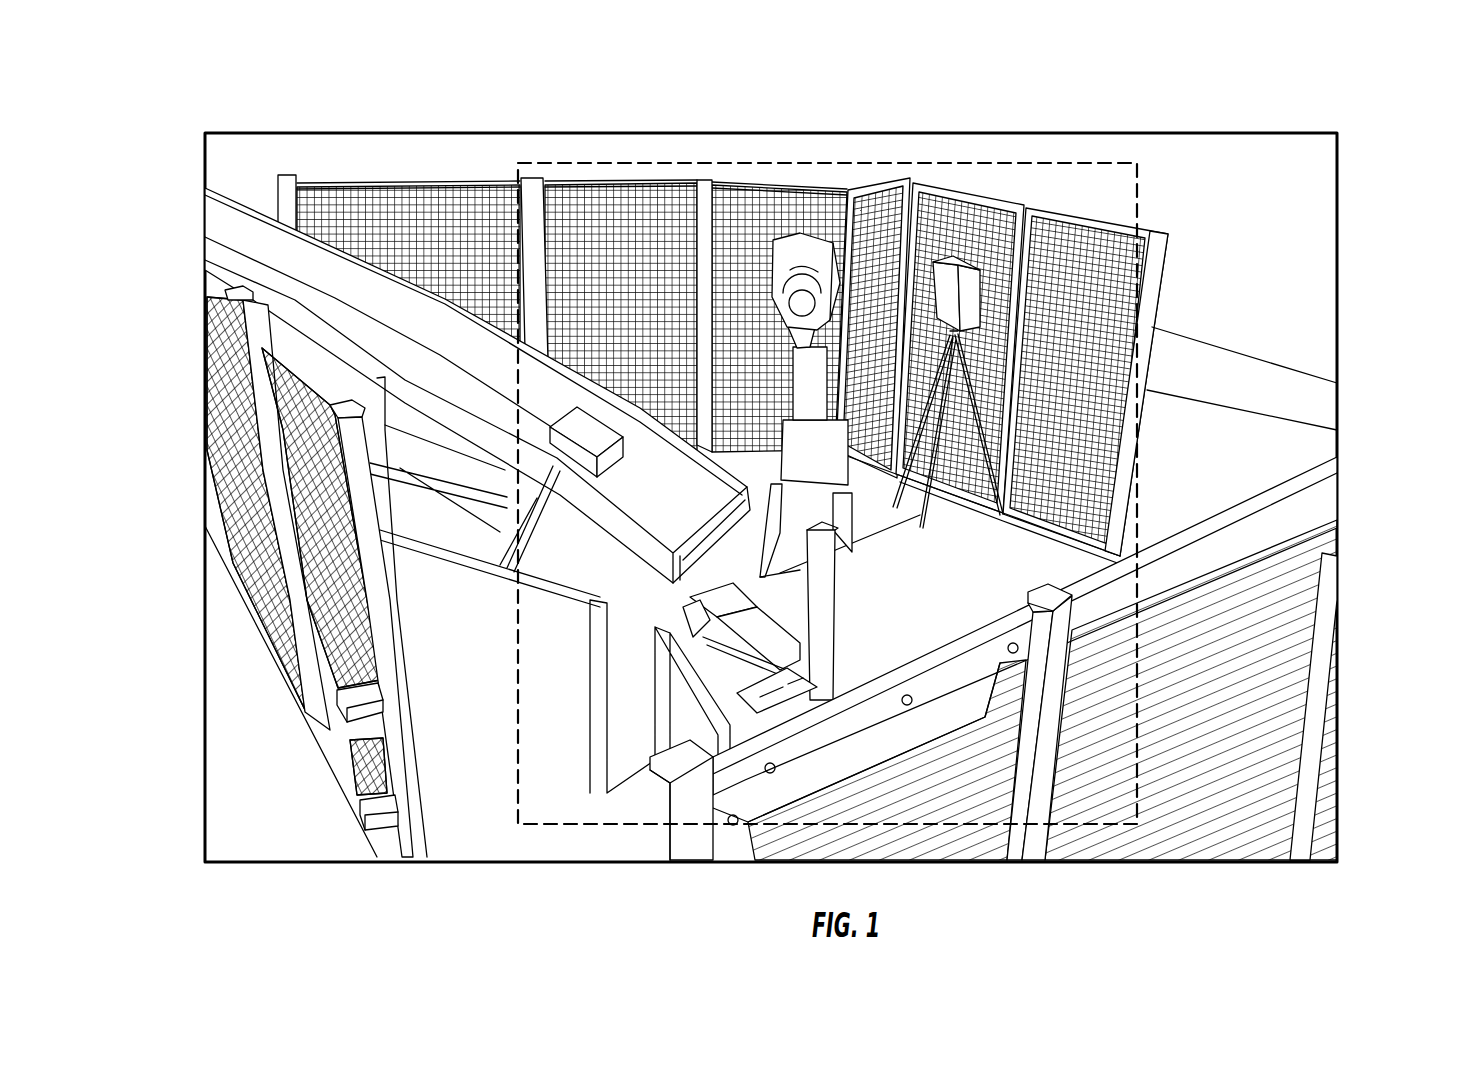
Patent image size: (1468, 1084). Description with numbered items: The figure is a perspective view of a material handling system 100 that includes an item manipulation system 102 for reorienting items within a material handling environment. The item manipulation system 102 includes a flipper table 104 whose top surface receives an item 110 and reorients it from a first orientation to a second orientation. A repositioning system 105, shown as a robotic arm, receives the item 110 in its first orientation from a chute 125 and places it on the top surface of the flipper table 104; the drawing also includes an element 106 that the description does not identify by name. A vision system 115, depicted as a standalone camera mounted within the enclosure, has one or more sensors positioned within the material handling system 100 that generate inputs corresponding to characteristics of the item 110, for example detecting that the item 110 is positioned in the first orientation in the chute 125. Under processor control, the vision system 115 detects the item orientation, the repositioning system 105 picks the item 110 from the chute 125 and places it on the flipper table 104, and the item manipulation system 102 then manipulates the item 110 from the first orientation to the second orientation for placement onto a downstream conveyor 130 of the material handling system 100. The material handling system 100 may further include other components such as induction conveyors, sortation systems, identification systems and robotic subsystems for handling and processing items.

The material handling system 100 is at (1212, 97).
The item manipulation system 102 is at (628, 827).
The flipper table 104 is at (1096, 496).
The repositioning system 105 is at (808, 243).
The robot base 106 is at (858, 535).
The item 110 is at (587, 428).
The vision system 115 is at (990, 337).
The chute 125 is at (232, 226).
The conveyor 130 is at (767, 648).